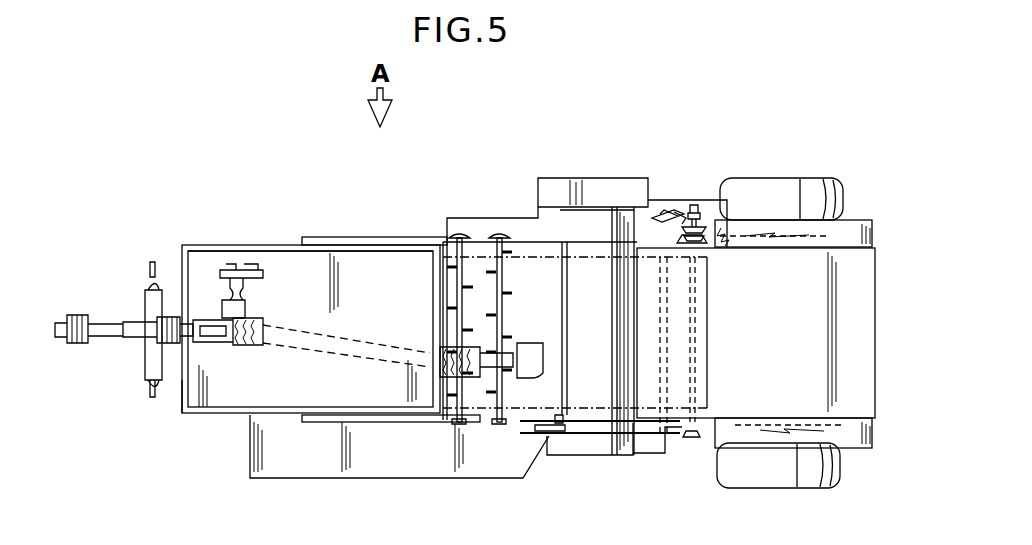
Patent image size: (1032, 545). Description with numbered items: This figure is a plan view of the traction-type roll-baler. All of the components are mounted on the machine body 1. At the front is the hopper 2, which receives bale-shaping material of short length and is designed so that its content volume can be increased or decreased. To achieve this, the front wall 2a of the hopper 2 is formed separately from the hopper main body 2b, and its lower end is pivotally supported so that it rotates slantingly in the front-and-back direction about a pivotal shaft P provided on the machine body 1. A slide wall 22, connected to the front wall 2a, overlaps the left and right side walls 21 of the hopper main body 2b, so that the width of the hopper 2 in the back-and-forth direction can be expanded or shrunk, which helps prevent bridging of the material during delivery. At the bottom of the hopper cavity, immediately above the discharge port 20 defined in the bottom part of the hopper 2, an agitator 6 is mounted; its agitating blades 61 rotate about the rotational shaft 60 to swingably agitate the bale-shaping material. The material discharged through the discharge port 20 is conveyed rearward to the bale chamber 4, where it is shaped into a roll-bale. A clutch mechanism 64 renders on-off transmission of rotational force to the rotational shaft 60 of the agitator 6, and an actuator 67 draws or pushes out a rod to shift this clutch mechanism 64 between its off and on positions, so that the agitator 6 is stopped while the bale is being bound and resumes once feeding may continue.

The machine body 1 is at (588, 460).
The hopper 2 is at (308, 325).
The front wall 2a is at (183, 390).
The hopper main body 2b is at (565, 370).
The bale chamber 4 is at (858, 210).
The agitator 6 is at (455, 292).
The discharge port 20 is at (482, 265).
The side walls 21 is at (366, 238).
The slide wall 22 is at (316, 247).
The rotational shaft 60 is at (490, 306).
The agitating blades 61 is at (497, 294).
The clutch mechanism 64 is at (699, 222).
The actuator 67 is at (657, 210).
The pivotal shaft P is at (435, 390).